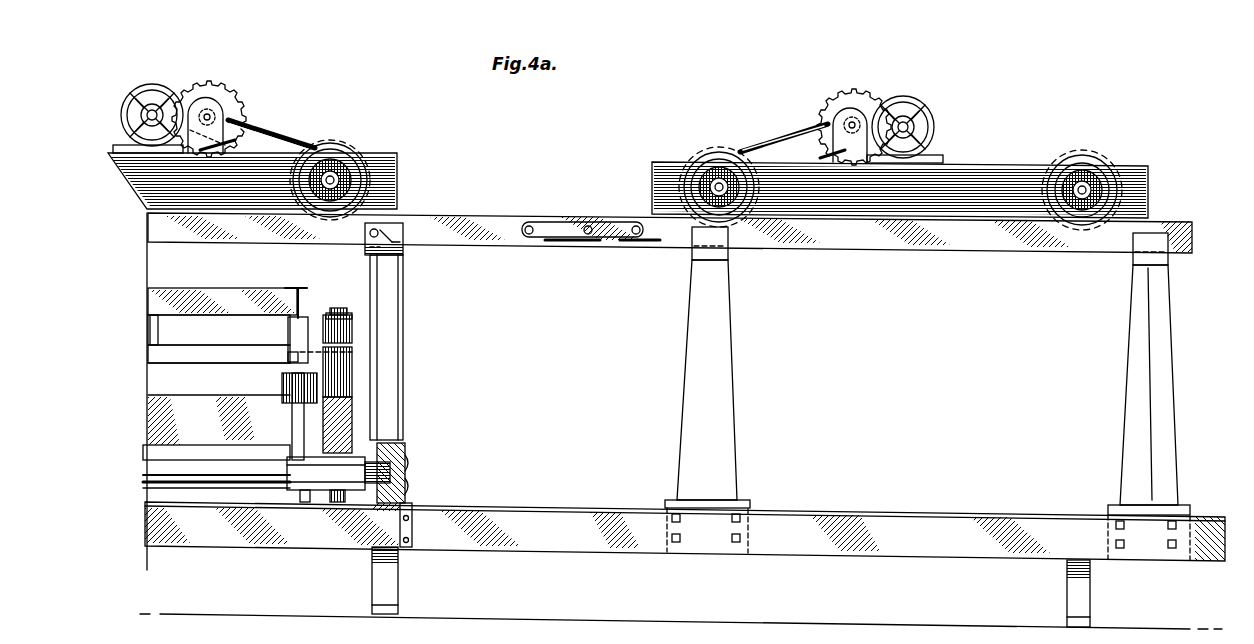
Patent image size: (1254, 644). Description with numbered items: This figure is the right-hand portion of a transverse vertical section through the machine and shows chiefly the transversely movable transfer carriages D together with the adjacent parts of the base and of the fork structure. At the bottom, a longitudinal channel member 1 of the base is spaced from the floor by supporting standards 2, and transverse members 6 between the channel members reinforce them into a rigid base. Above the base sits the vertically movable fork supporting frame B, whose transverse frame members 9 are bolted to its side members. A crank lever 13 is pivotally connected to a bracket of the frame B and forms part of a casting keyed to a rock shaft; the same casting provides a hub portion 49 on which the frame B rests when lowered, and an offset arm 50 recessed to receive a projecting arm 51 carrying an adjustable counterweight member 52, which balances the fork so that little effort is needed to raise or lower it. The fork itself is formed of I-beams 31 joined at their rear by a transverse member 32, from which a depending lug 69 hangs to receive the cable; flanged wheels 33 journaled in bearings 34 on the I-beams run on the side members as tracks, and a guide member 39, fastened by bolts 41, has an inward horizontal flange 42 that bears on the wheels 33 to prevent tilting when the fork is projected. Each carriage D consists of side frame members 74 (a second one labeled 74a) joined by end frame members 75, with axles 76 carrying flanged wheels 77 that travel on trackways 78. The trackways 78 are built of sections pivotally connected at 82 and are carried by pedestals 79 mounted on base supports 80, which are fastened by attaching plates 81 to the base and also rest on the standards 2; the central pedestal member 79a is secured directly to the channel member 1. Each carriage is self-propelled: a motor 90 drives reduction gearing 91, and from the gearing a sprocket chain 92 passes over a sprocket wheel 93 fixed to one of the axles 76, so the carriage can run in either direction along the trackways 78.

The longitudinal channel member 1 is at (400, 470).
The supporting standard 2 is at (390, 583).
The transverse member 6 is at (163, 450).
The transverse frame member 9 is at (219, 404).
The crank lever 13 is at (340, 503).
The I-beam 31 is at (297, 287).
The transverse member 32 is at (218, 305).
The flanged wheel 33 is at (340, 353).
The bearing 34 is at (290, 329).
The guide member 39 is at (352, 330).
The bolt 41 is at (347, 311).
The horizontal flange 42 is at (336, 307).
The hub portion 49 is at (337, 475).
The offset arm 50 is at (288, 455).
The projecting arm 51 is at (292, 411).
The counterweight member 52 is at (282, 379).
The depending lug 69 is at (148, 322).
The side frame member 74 is at (150, 175).
The carriage beam 74a is at (223, 467).
The end frame member 75 is at (1128, 172).
The axle 76 is at (719, 180).
The flanged wheel 77 is at (692, 161).
The trackway 78 is at (252, 228).
The pedestal 79 is at (722, 392).
The central pedestal member 79a is at (388, 401).
The base support 80 is at (874, 518).
The attaching plate 81 is at (405, 506).
The pivotal connection 82 is at (560, 220).
The motor 90 is at (150, 84).
The reduction gearing 91 is at (224, 82).
The sprocket chain 92 is at (285, 133).
The sprocket wheel 93 is at (350, 150).
The transfer carriage D is at (987, 149).
The fork supporting frame B is at (164, 482).